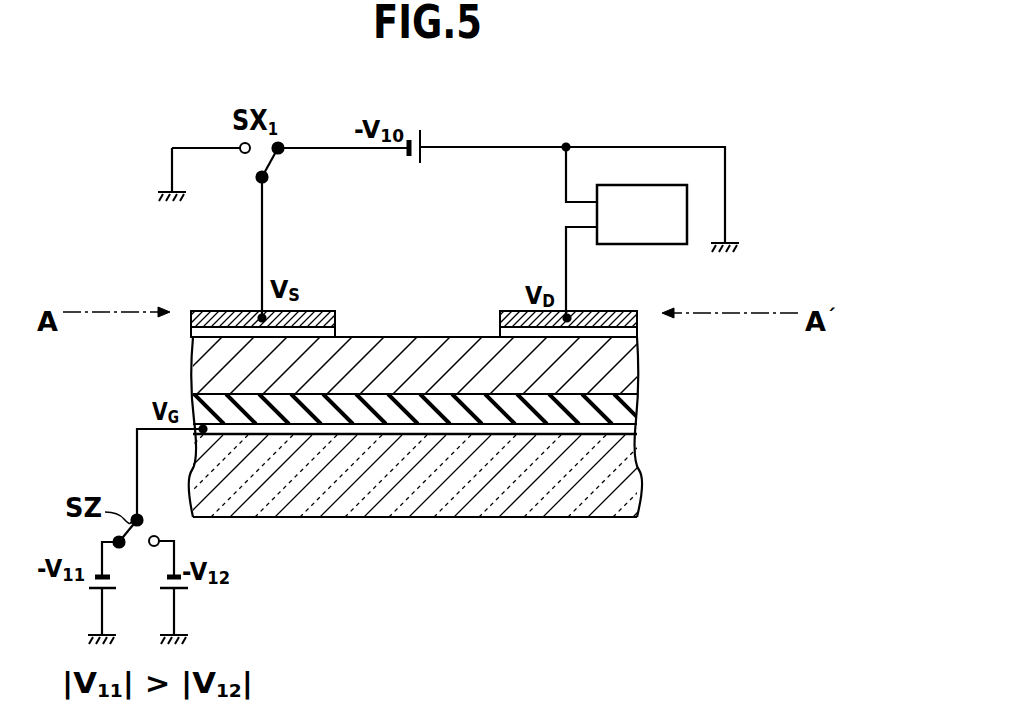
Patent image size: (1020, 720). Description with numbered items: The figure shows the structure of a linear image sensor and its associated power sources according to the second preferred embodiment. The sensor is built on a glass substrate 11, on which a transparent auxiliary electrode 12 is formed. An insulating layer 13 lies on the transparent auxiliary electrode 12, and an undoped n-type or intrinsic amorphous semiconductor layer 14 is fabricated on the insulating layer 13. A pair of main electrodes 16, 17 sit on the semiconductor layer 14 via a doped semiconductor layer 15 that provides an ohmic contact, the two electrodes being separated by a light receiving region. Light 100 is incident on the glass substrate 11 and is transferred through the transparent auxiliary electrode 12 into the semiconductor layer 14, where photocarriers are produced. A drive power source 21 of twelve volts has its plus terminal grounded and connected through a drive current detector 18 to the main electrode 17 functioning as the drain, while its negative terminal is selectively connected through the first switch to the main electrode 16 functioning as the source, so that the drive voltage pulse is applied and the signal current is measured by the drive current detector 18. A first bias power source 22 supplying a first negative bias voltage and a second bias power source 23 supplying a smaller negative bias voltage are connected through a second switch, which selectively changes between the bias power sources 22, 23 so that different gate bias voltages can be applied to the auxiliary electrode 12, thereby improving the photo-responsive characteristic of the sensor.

The glass substrate 11 is at (635, 500).
The transparent auxiliary electrode 12 is at (635, 430).
The insulating layer 13 is at (637, 408).
The semiconductor layer 14 is at (633, 380).
The doped semiconductor layer 15 is at (637, 335).
The main electrode (source) 16 is at (212, 311).
The main electrode (drain) 17 is at (600, 311).
The drive current detector 18 is at (661, 185).
The drive power source 21 is at (415, 130).
The first bias power source 22 is at (90, 593).
The second bias power source 23 is at (180, 595).
The light 100 is at (419, 442).